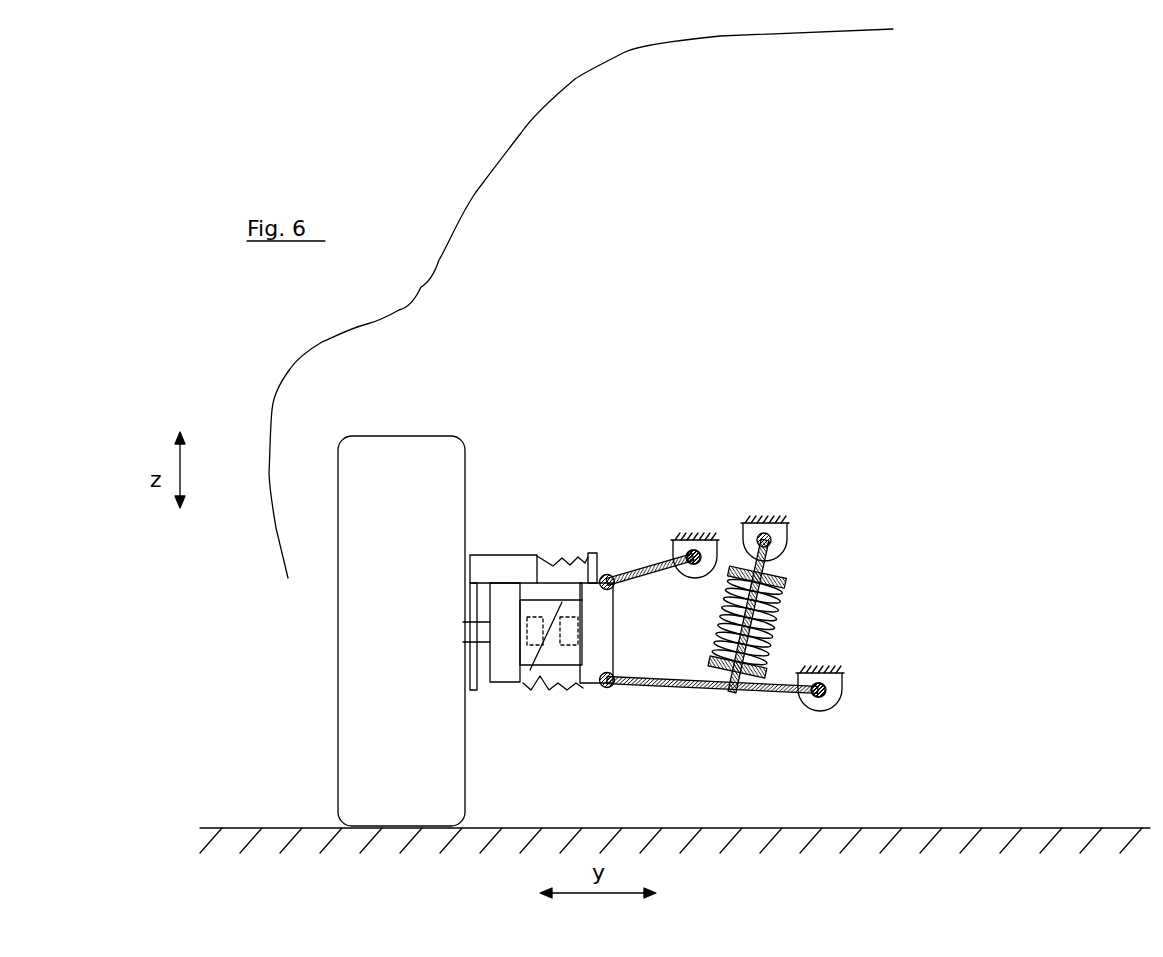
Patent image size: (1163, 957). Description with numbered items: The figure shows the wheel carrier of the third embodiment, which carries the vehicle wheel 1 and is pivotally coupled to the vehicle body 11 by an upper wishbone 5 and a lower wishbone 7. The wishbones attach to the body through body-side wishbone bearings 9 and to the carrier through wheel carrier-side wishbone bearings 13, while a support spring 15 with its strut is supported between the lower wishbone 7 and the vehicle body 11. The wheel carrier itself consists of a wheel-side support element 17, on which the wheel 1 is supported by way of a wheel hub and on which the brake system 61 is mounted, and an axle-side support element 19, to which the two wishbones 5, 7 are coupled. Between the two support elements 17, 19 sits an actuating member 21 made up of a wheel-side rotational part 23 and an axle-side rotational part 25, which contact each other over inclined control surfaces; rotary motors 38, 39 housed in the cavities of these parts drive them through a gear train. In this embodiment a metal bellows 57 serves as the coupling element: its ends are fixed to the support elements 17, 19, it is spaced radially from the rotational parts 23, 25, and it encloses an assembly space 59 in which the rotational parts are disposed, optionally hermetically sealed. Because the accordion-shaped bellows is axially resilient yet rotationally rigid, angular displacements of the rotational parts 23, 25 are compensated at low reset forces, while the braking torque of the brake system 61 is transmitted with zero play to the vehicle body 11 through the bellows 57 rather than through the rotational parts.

The vehicle wheel 1 is at (417, 432).
The upper wishbone 5 is at (637, 571).
The lower wishbone 7 is at (755, 694).
The body-side wishbone bearings 9 is at (695, 568).
The vehicle body 11 is at (679, 537).
The wheel carrier-side wishbone bearings 13 is at (605, 575).
The support spring 15 is at (772, 600).
The wheel-side support element 17 is at (505, 683).
The axle-side support element 19 is at (612, 622).
The actuating member 21 is at (567, 581).
The wheel-side rotational part 23 is at (527, 607).
The axle-side rotational part 25 is at (591, 565).
The rotary motor 38 is at (523, 680).
The rotary motor 39 is at (552, 680).
The metal bellows 57 is at (540, 549).
The assembly space 59 is at (546, 675).
The brake system 61 is at (495, 549).